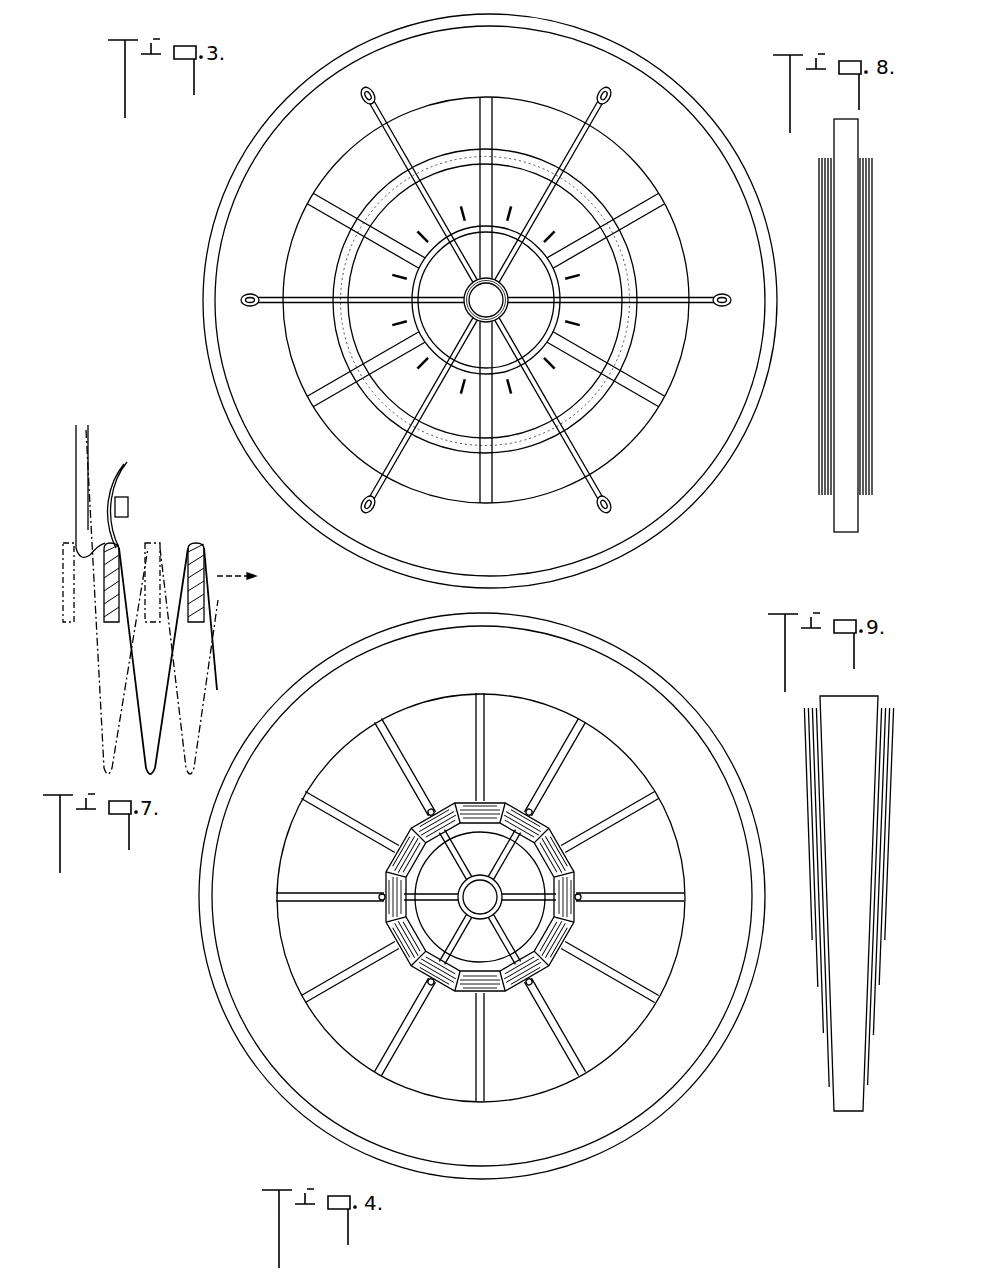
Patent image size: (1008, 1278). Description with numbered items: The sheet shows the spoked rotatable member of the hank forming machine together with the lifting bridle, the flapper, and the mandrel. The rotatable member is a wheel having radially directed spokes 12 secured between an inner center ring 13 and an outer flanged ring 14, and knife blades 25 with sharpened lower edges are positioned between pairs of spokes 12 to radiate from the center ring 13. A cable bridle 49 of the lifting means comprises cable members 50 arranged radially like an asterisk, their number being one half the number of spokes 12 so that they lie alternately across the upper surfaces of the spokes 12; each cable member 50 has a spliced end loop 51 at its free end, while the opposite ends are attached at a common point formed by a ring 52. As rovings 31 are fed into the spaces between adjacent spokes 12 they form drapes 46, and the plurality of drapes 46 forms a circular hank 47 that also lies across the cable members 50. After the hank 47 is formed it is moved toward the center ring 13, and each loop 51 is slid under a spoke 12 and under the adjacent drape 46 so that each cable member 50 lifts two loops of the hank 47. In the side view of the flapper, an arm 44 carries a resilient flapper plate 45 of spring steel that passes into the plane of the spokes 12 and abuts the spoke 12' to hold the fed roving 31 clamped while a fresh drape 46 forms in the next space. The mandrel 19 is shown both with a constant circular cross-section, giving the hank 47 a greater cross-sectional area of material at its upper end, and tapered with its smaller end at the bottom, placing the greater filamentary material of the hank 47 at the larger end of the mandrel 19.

In FIG. 3, the spoke 12 is at (486, 300).
In FIG. 4, the spoke 12 is at (480, 897).
In FIG. 7, the spoke 12 is at (222, 568).
In FIG. 7, the spoke 12' is at (148, 563).
In FIG. 4, the inner center ring 13 is at (480, 897).
In FIG. 3, the outer flanged ring 14 is at (725, 395).
In FIG. 4, the outer flanged ring 14 is at (650, 692).
In FIG. 3, the mandrel 19 is at (486, 278).
In FIG. 4, the mandrel 19 is at (480, 919).
In FIG. 8, the mandrel 19 is at (848, 142).
In FIG. 9, the mandrel 19 is at (866, 703).
In FIG. 3, the knife blade 25 is at (489, 299).
In FIG. 4, the knife blade 25 is at (509, 878).
In FIG. 7, the roving 31 is at (76, 494).
In FIG. 7, the arm 44 is at (128, 500).
In FIG. 7, the flapper plate 45 is at (130, 472).
In FIG. 7, the drape 46 is at (140, 748).
In FIG. 4, the hank 47 is at (480, 877).
In FIG. 8, the hank 47 is at (866, 276).
In FIG. 9, the hank 47 is at (806, 748).
In FIG. 3, the cable bridle 49 is at (463, 310).
In FIG. 4, the cable bridle 49 is at (480, 897).
In FIG. 3, the cable member 50 is at (494, 299).
In FIG. 4, the cable member 50 is at (480, 897).
In FIG. 3, the spliced end loop 51 is at (485, 287).
In FIG. 3, the ring 52 is at (486, 300).